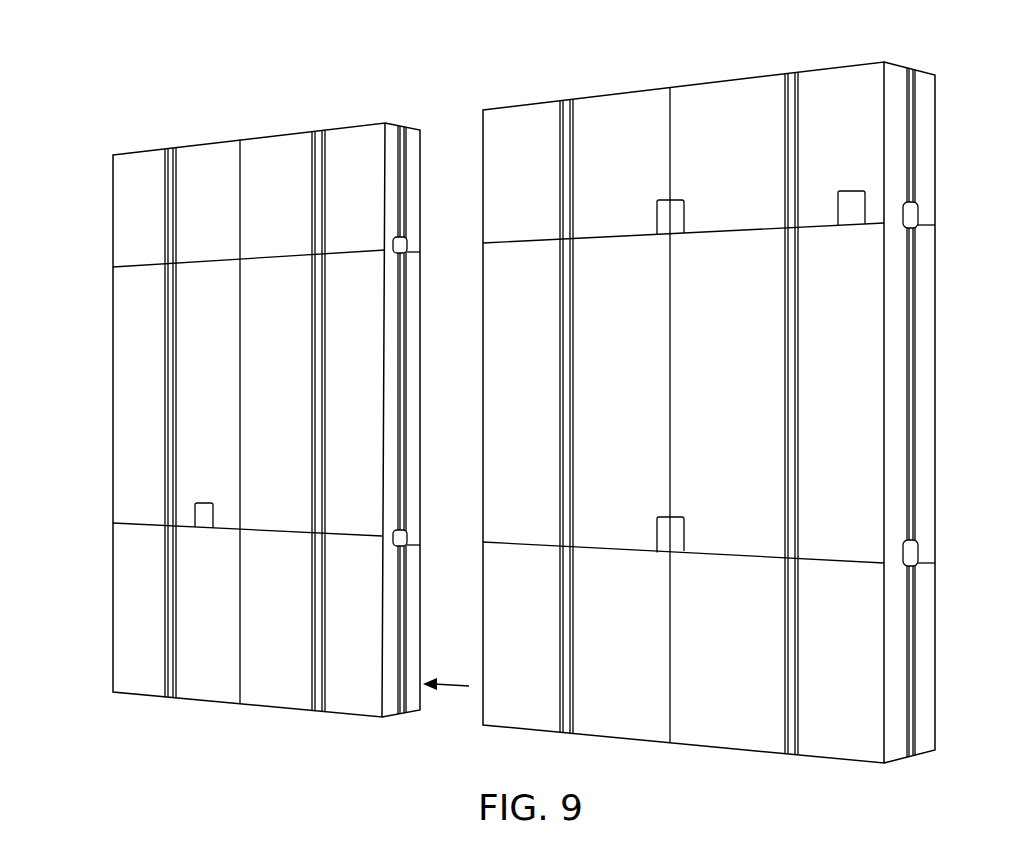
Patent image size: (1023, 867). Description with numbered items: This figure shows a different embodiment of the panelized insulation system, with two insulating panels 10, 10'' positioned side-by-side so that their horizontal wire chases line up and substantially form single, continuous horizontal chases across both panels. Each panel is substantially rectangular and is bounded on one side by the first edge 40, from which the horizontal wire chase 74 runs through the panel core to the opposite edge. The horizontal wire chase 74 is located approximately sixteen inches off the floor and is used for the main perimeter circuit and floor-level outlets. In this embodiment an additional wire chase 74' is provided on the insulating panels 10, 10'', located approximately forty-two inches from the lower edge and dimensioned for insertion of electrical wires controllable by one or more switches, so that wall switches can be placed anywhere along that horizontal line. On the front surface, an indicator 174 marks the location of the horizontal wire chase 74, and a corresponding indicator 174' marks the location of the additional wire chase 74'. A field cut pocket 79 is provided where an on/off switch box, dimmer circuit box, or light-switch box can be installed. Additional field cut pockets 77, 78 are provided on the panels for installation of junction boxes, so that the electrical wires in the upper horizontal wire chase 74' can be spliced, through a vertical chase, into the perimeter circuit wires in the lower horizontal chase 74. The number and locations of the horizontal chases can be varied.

The insulating panel 10 is at (521, 412).
The insulating panel 10'' is at (726, 402).
The first edge 40 is at (413, 337).
The horizontal wire chase 74 is at (679, 523).
The additional wire chase 74' is at (689, 210).
The field cut pocket 77 is at (657, 520).
The field cut pocket 78 is at (687, 198).
The field cut pocket 79 is at (866, 190).
The indicator 174 is at (217, 512).
The indicator 174' is at (218, 246).